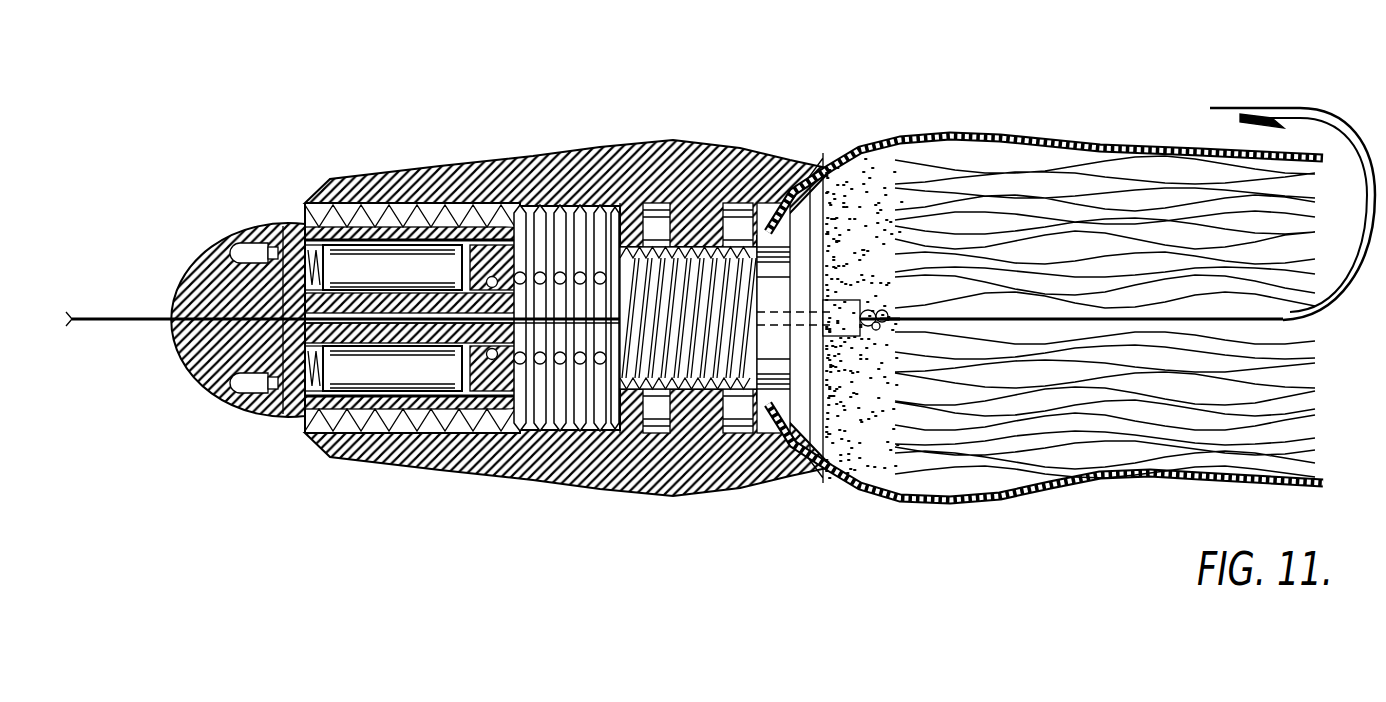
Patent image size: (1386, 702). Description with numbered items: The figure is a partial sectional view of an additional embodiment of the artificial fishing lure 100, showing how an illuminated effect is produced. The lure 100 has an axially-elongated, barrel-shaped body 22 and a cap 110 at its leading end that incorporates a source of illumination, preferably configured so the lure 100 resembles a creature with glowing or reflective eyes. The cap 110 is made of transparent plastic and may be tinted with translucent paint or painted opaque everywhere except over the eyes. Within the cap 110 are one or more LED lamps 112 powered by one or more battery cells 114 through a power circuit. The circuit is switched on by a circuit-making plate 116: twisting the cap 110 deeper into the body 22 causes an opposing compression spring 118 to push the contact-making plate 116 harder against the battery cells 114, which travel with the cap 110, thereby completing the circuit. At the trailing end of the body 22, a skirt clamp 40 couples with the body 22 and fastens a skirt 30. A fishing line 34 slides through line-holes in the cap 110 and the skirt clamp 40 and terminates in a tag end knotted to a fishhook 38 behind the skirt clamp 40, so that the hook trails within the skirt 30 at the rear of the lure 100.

The lure 100 is at (368, 122).
The axially-elongated body 22 is at (466, 160).
The skirt 30 is at (847, 152).
The fishing line 34 is at (128, 317).
The fishhook 38 is at (1266, 108).
The skirt clamp 40 is at (767, 258).
The cap 110 is at (205, 257).
The LED lamps 112 is at (243, 250).
The battery cells 114 is at (390, 367).
The circuit-making plate 116 is at (516, 235).
The compression spring 118 is at (588, 272).